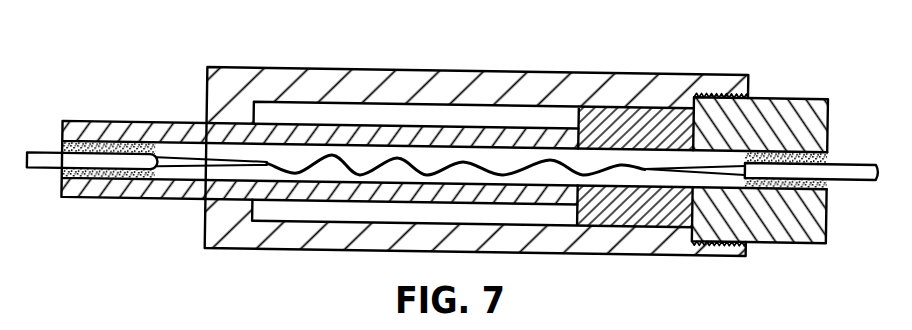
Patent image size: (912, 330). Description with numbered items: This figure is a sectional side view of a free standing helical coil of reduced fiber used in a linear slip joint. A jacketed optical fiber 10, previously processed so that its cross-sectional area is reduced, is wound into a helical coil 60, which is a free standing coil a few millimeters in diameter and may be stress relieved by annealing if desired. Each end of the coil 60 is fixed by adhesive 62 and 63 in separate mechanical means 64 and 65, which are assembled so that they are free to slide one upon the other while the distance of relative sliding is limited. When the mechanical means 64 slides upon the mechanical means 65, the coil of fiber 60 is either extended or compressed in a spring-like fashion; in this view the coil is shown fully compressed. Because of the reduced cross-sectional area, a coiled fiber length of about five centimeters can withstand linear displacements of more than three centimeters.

The jacketed optical fiber 10 is at (40, 155).
The helical coil 60 is at (371, 164).
The adhesive 62 is at (103, 143).
The adhesive 63 is at (770, 142).
The mechanical means 64 is at (158, 123).
The mechanical means 65 is at (277, 79).